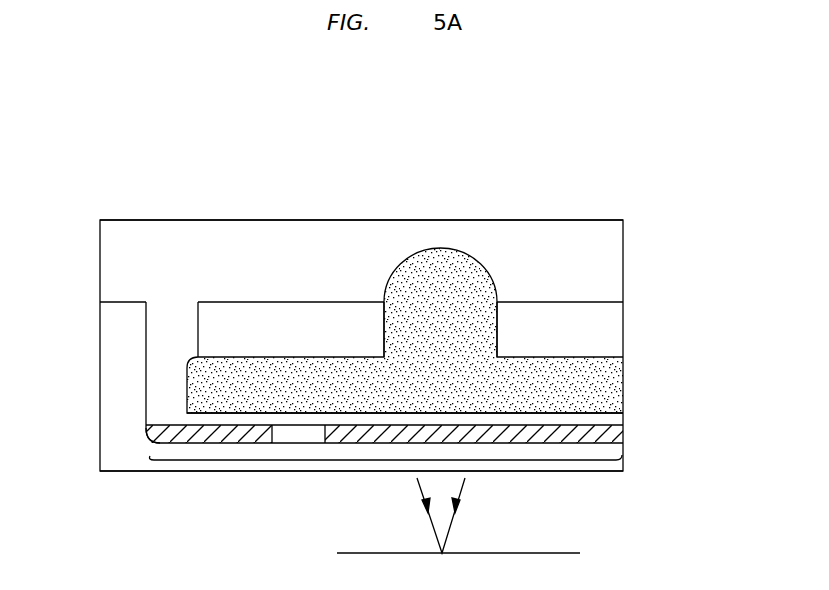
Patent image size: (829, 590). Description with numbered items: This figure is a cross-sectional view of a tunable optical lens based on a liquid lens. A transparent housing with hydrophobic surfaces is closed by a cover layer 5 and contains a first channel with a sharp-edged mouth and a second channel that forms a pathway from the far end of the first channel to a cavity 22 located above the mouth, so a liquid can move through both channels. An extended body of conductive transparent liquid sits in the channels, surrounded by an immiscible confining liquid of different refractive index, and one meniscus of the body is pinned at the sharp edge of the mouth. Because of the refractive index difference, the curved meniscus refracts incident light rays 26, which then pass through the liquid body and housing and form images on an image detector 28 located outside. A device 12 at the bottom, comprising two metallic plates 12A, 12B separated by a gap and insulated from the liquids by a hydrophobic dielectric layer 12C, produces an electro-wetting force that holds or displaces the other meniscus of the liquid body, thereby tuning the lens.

The cover layer 5 is at (150, 220).
The cavity 22 is at (254, 247).
The incident light rays 26 is at (473, 198).
The hydrophobic dielectric layer 12C is at (623, 417).
The metallic plate 12B is at (623, 437).
The metallic plate 12A is at (148, 444).
The device for controlling the position of liquid body 12 is at (382, 462).
The image detector 28 is at (528, 553).